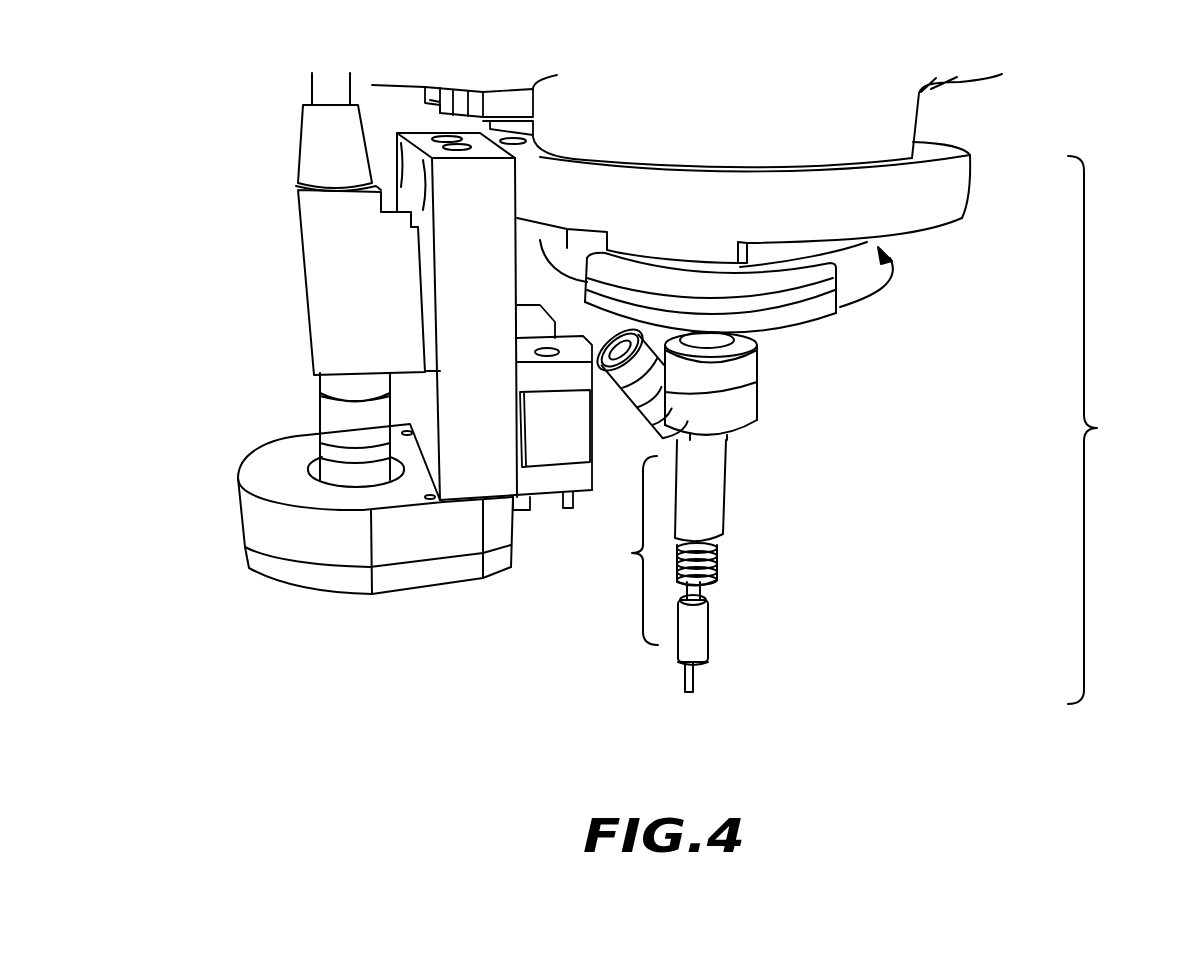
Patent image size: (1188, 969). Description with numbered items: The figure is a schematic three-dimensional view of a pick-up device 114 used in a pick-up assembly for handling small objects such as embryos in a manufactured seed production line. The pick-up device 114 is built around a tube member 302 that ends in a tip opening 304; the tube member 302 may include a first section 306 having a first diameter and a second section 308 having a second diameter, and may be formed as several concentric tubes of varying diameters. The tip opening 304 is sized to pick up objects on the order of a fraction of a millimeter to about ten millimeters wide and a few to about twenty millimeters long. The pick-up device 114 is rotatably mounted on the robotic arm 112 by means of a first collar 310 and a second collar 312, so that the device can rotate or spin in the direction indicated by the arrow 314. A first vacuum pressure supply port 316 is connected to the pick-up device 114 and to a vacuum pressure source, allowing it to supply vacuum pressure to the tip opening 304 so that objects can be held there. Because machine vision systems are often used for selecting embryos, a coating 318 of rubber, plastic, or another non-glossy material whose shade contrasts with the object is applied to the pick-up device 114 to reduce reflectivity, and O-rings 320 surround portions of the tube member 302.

The robotic arm 112 is at (645, 122).
The pick-up device 114 is at (1108, 430).
The tube member 302 is at (620, 550).
The tip opening 304 is at (695, 682).
The first section 306 is at (713, 493).
The second section 308 is at (705, 595).
The first collar 310 is at (803, 322).
The second collar 312 is at (935, 202).
The arrow 314 is at (886, 288).
The first vacuum pressure supply port 316 is at (645, 383).
The coating 318 is at (698, 640).
The O-rings 320 is at (705, 568).